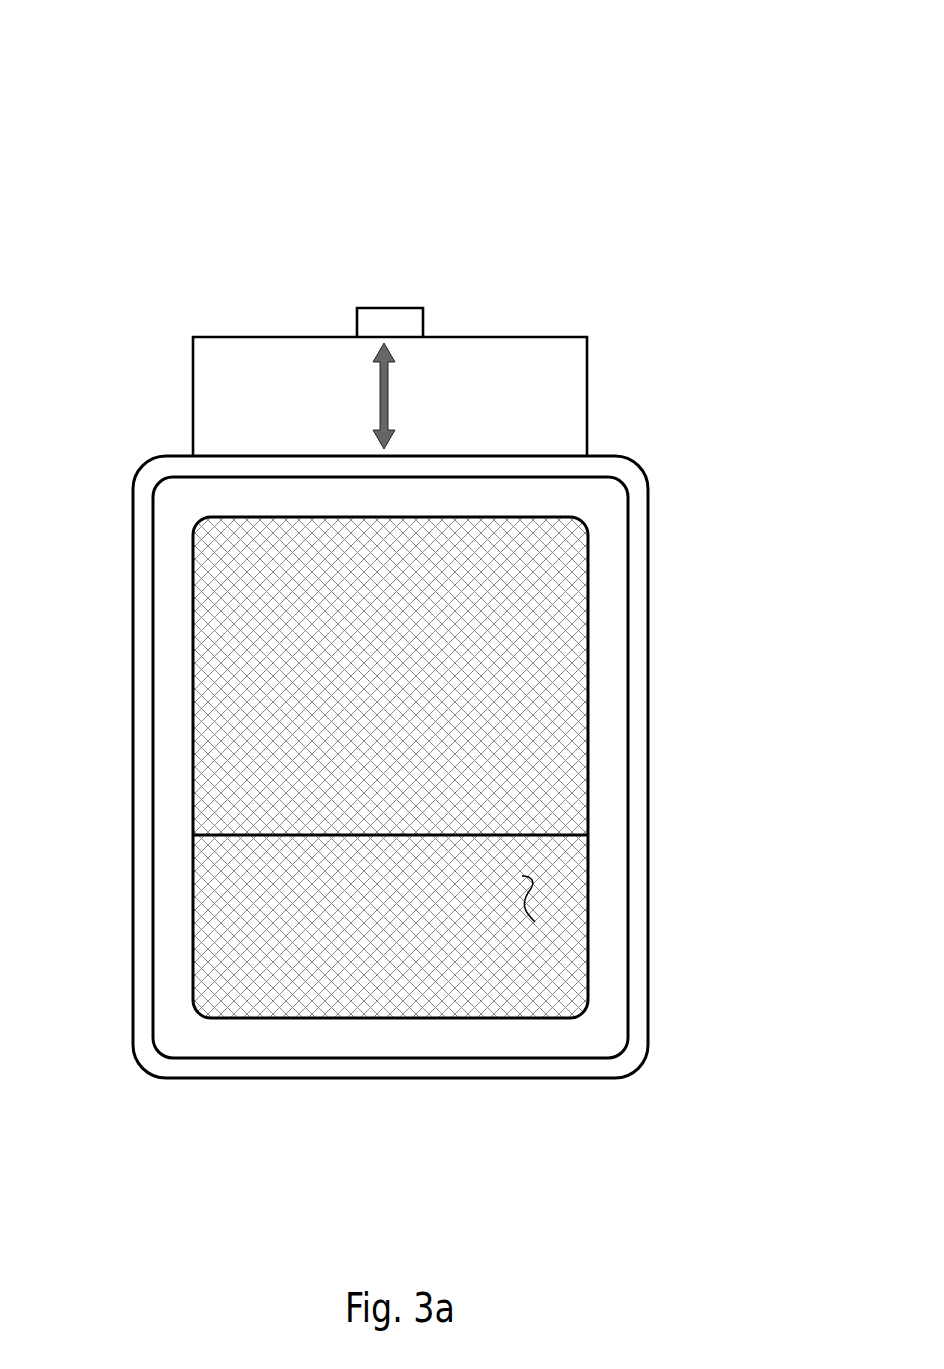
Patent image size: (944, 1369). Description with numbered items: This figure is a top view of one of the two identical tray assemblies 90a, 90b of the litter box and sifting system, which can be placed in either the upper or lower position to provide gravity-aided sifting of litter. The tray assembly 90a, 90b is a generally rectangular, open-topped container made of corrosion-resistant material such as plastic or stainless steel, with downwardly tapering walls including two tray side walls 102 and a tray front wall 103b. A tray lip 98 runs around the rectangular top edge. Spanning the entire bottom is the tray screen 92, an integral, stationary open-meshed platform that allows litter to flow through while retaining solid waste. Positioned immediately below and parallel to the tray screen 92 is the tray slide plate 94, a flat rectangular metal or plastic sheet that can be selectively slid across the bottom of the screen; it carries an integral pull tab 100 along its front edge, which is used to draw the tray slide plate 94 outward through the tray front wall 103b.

The tray assembly 90a is at (653, 108).
The tray assembly 90b is at (377, 720).
The tray screen 92 is at (528, 892).
The tray slide plate 94 is at (560, 380).
The tray lip 98 is at (205, 1063).
The pull tab 100 is at (407, 323).
The tray side wall 102 is at (603, 503).
The tray front wall 103b is at (213, 498).